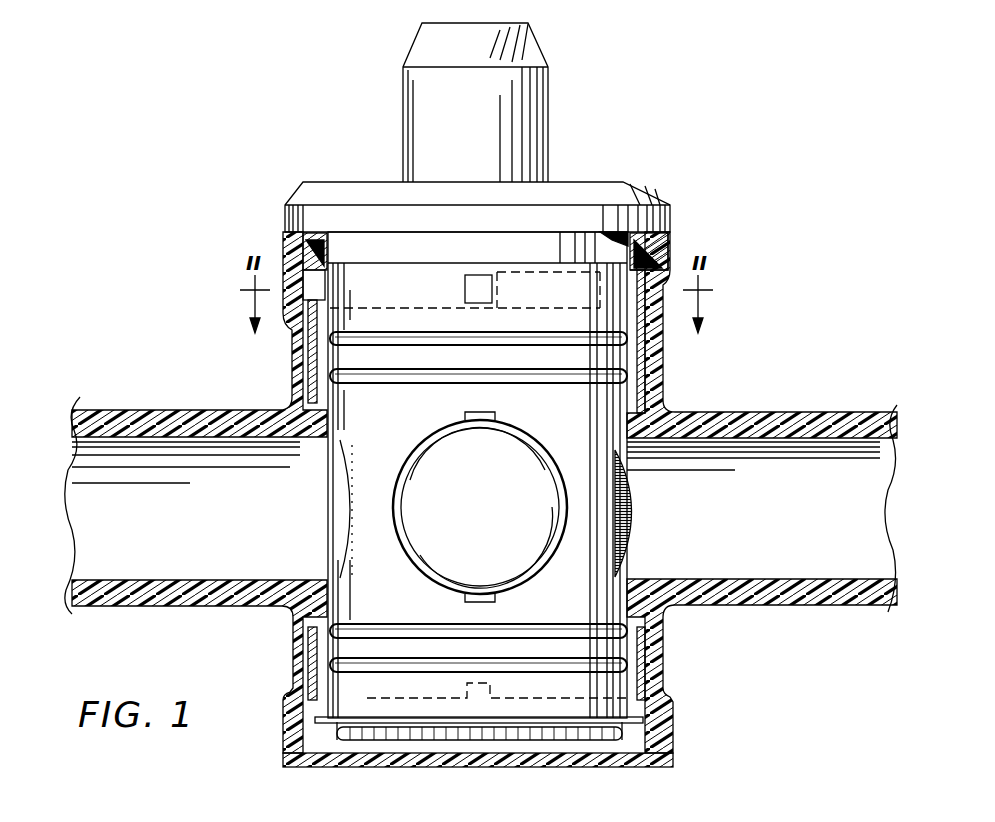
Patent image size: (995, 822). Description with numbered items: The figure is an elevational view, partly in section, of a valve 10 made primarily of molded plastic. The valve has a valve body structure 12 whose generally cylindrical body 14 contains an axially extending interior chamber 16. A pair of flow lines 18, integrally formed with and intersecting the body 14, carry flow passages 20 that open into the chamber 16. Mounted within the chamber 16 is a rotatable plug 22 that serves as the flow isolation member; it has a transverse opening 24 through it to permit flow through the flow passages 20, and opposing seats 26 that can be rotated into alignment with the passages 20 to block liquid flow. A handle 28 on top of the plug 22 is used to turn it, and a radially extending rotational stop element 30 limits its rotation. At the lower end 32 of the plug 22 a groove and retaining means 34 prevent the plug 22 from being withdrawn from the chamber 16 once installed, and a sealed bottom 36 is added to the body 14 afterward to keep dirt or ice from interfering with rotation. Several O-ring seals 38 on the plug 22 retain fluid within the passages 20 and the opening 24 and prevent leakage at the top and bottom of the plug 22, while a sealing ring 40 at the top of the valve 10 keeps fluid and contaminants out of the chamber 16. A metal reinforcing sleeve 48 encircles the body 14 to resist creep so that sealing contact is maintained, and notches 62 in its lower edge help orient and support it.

The valve 10 is at (753, 153).
The valve body structure 12 is at (745, 374).
The body 14 is at (655, 390).
The interior chamber 16 is at (330, 408).
The flow lines 18 is at (120, 410).
The flow passages 20 is at (235, 480).
The plug 22 is at (372, 582).
The transverse opening 24 is at (338, 510).
The seats 26 is at (528, 568).
The handle 28 is at (550, 98).
The rotational stop element 30 is at (465, 290).
The lower end 32 is at (603, 708).
The retaining means 34 is at (322, 738).
The sealed bottom 36 is at (583, 768).
The O-ring seals 38 is at (632, 377).
The sealing ring 40 is at (672, 248).
The sleeve 48 is at (300, 334).
The notches 62 is at (312, 684).